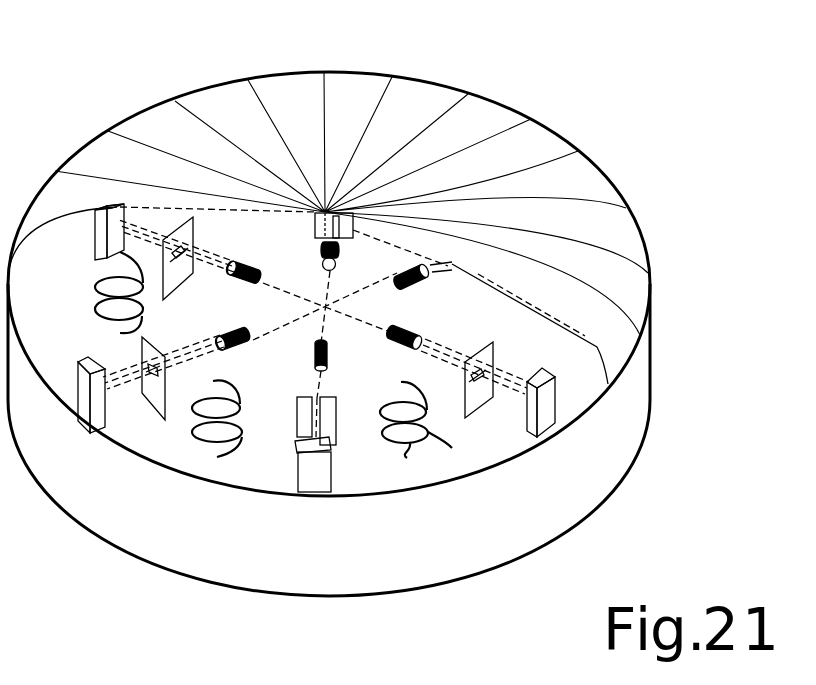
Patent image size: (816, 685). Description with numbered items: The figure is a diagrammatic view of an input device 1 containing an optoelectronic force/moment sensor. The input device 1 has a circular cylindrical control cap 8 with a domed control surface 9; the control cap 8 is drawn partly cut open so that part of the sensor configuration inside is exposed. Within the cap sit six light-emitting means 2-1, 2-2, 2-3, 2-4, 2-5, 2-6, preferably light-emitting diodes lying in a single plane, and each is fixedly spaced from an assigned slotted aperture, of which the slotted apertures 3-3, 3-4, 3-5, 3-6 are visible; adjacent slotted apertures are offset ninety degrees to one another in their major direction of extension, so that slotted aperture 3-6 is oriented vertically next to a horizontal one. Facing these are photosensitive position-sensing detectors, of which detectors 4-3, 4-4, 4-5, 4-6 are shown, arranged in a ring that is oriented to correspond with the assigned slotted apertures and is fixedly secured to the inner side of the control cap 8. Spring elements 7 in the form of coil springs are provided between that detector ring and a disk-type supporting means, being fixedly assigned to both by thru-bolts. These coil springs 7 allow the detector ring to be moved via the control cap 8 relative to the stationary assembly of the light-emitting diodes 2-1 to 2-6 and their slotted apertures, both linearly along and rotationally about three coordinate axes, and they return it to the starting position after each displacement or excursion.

The input device 1 is at (588, 100).
The control cap 8 is at (635, 396).
The domed control surface 9 is at (609, 218).
The light-emitting means 2-1 is at (324, 257).
The light-emitting means 2-2 is at (397, 273).
The light-emitting means 2-3 is at (402, 331).
The light-emitting means 2-4 is at (328, 362).
The light-emitting means 2-5 is at (222, 333).
The light-emitting means 2-6 is at (254, 265).
The slotted aperture 3-3 is at (482, 352).
The slotted aperture 3-4 is at (338, 410).
The slotted aperture 3-5 is at (158, 392).
The slotted aperture 3-6 is at (192, 249).
The position-sensing detector 4-3 is at (558, 380).
The position-sensing detector 4-4 is at (298, 473).
The position-sensing detector 4-5 is at (82, 392).
The position-sensing detector 4-6 is at (97, 230).
The spring elements 7 is at (95, 312).